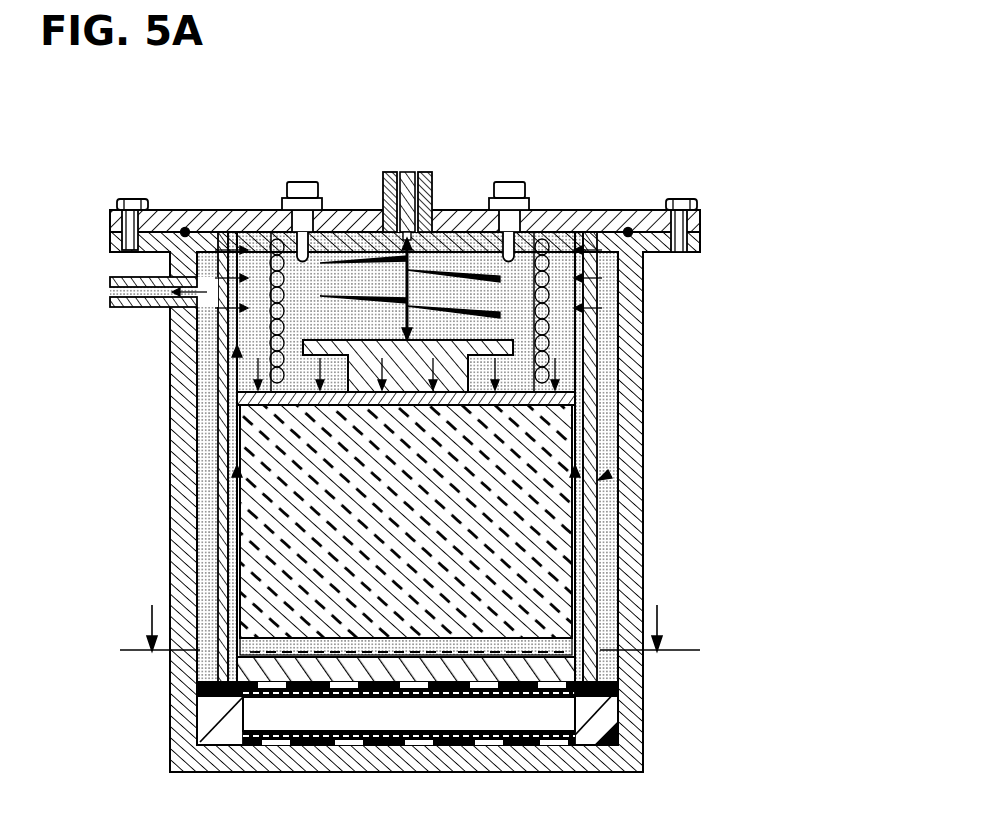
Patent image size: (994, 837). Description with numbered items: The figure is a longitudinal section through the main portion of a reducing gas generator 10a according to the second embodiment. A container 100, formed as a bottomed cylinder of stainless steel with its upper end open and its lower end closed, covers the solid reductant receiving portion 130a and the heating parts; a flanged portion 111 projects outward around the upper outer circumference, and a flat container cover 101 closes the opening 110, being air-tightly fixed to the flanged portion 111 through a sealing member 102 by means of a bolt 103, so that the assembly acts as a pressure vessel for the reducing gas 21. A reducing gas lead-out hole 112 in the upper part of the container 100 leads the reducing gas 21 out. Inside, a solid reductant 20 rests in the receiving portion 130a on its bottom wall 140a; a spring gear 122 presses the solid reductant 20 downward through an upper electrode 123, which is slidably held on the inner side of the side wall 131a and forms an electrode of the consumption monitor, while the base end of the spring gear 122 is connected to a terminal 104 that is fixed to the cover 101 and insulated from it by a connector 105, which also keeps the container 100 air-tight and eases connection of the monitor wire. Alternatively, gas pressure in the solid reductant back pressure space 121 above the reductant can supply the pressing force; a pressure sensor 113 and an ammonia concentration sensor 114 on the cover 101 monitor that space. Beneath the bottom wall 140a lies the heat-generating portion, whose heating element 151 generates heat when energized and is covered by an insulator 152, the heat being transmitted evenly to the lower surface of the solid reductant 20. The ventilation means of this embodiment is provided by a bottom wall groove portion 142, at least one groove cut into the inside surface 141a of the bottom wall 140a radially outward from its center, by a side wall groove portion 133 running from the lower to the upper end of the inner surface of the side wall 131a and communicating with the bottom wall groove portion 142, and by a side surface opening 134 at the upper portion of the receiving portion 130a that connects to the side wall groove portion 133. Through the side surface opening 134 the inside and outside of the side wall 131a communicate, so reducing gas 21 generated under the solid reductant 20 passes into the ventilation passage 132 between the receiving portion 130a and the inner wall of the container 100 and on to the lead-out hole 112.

The reducing gas generator 10a is at (676, 157).
The container 100 is at (630, 398).
The container cover 101 is at (211, 227).
The sealing member 102 is at (186, 227).
The bolt 103 is at (133, 199).
The terminal 104 is at (508, 182).
The connector 105 is at (408, 172).
The opening 110 is at (568, 218).
The flanged portion 111 is at (725, 265).
The reducing gas lead-out hole 112 is at (159, 334).
The pressure sensor 113 is at (300, 183).
The gas concentration sensor 114 is at (535, 232).
The solid reductant back pressure space 121 is at (546, 283).
The spring gear 122 is at (410, 318).
The upper electrode 123 is at (598, 391).
The solid reductant receiving portion 130a is at (597, 463).
The solid reductant receiving portion side wall 131a is at (605, 486).
The ventilation passage 132 is at (608, 435).
The side wall groove portion 133 is at (628, 510).
The side surface opening 134 is at (690, 204).
The solid reductant 20 is at (560, 550).
The reducing gas 21 is at (408, 640).
The solid reductant receiving portion bottom wall 140a is at (622, 654).
The inside surface 141a is at (468, 640).
The bottom wall groove portion 142 is at (598, 628).
The heating element 151 is at (560, 710).
The insulator 152 is at (600, 727).